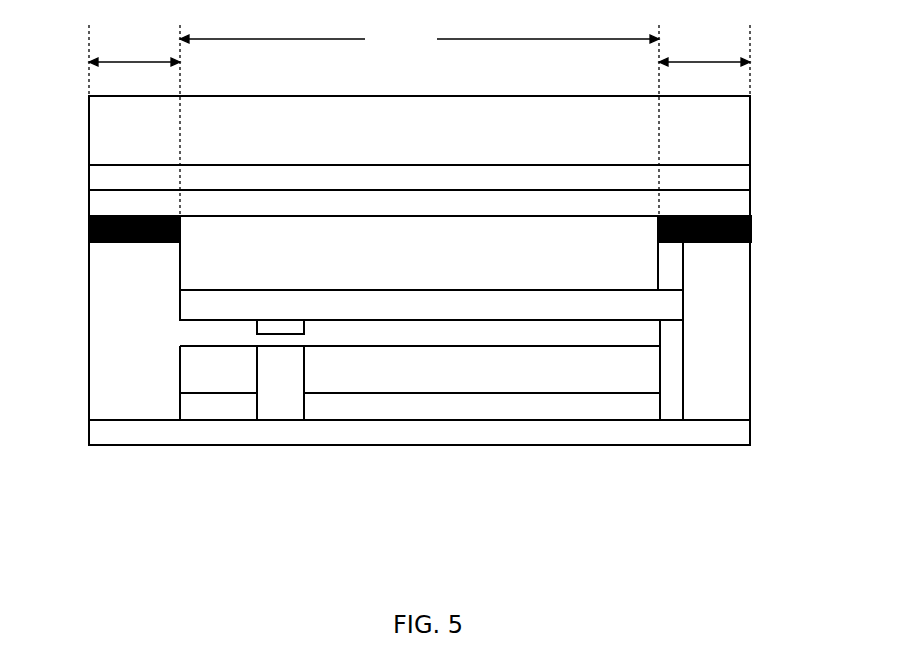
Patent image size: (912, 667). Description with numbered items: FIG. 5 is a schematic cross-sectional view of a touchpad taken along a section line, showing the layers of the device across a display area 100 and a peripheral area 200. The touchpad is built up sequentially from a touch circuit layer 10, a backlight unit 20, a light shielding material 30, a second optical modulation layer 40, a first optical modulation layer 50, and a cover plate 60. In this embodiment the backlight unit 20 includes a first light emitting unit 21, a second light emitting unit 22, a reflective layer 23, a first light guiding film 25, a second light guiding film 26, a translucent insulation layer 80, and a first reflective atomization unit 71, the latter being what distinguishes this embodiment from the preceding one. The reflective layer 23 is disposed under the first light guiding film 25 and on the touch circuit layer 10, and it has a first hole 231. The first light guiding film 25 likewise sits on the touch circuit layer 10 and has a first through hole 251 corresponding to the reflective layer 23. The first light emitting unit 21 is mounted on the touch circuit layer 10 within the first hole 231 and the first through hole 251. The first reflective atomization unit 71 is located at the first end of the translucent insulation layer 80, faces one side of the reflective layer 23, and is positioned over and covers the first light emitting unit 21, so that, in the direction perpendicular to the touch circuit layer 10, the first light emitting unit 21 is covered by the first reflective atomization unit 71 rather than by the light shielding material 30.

The touch circuit layer 10 is at (702, 440).
The backlight unit 20 is at (757, 275).
The first light emitting unit 21 is at (280, 410).
The second light emitting unit 22 is at (733, 352).
The reflective layer 23 is at (590, 408).
The first hole 231 is at (304, 409).
The first light guiding film 25 is at (240, 366).
The first through hole 251 is at (304, 375).
The second light guiding film 26 is at (435, 261).
The light shielding material 30 is at (752, 227).
The second optical modulation layer 40 is at (88, 203).
The first optical modulation layer 50 is at (751, 177).
The cover plate 60 is at (88, 140).
The first reflective atomization unit 71 is at (257, 327).
The translucent insulation layer 80 is at (178, 305).
The display area 100 is at (419, 120).
The peripheral area 200 is at (419, 60).